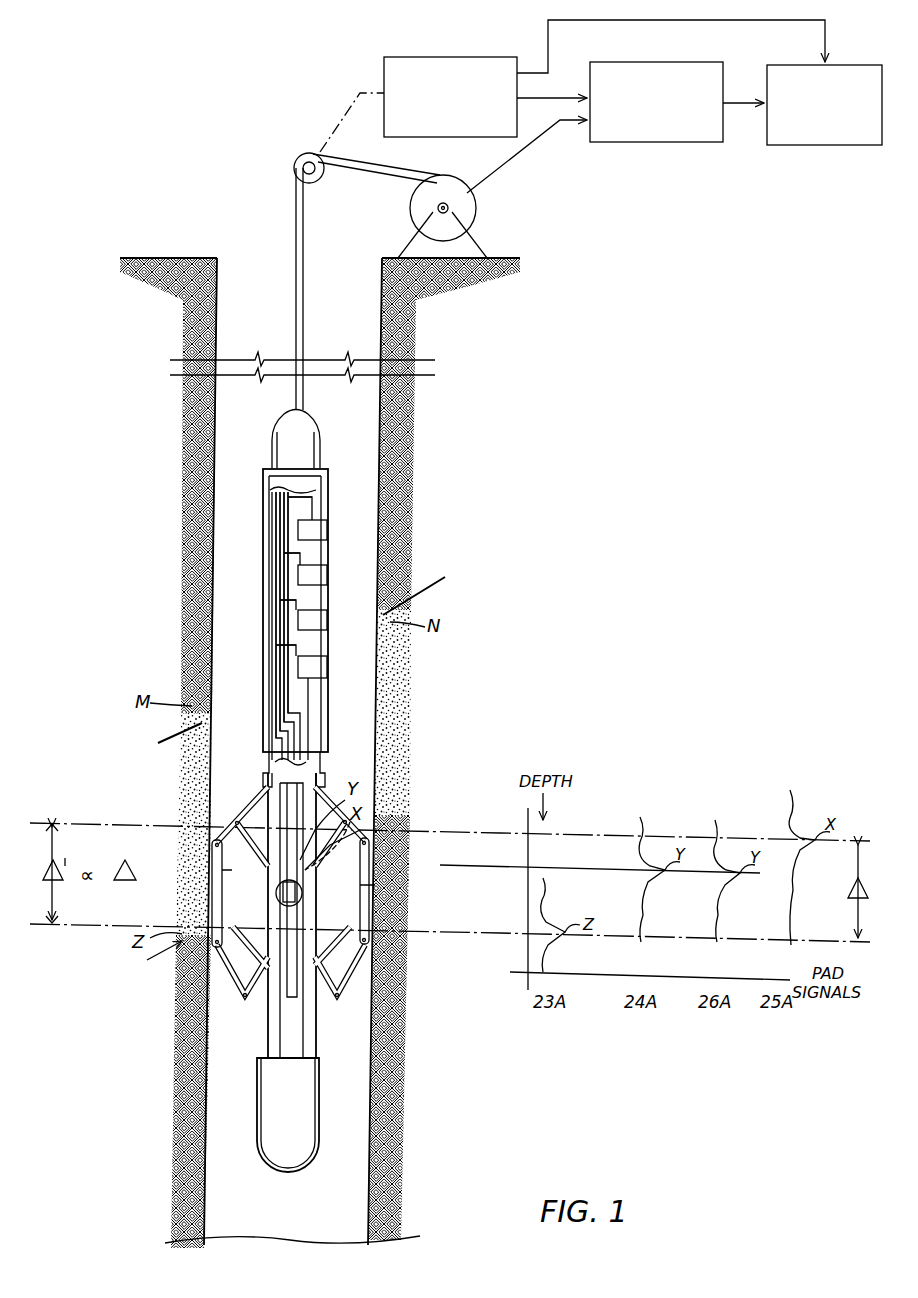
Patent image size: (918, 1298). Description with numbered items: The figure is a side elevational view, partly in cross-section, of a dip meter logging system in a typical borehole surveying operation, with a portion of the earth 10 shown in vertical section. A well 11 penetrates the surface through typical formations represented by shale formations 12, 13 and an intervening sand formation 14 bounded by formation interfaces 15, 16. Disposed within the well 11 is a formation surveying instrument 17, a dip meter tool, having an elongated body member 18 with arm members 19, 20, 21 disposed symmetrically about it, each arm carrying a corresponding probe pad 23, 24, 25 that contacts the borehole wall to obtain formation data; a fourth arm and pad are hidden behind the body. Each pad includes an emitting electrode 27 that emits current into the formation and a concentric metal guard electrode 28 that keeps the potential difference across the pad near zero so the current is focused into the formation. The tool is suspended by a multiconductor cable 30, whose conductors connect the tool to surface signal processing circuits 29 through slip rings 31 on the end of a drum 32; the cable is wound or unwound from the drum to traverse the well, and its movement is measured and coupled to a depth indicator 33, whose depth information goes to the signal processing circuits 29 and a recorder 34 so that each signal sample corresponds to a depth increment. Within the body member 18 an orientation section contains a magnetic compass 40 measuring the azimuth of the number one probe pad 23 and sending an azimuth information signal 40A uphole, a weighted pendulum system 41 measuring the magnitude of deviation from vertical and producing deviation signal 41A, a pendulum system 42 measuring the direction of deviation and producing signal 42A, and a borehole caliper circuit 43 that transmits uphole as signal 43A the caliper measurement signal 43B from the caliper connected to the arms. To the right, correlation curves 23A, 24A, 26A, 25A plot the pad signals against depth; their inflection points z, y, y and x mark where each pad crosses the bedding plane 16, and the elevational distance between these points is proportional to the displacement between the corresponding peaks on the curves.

The earth 10 is at (140, 258).
The well 11 is at (365, 330).
The shale formation 12 is at (168, 753).
The shale formation 13 is at (167, 1036).
The sand formation 14 is at (283, 772).
The formation interface 15 is at (445, 577).
The formation interface 16 is at (380, 820).
The formation surveying instrument 17 is at (340, 665).
The elongated body member 18 is at (283, 552).
The arm member 19 is at (230, 820).
The arm member 20 is at (295, 1000).
The arm member 21 is at (380, 855).
The probe pad 23 is at (212, 872).
The probe pad 24 is at (298, 884).
The probe pad 25 is at (370, 905).
The emitting electrode 27 is at (283, 890).
The guard electrode 28 is at (245, 970).
The signal processing circuits 29 is at (655, 142).
The multiconductor cable 30 is at (296, 313).
The slip rings 31 is at (455, 210).
The drum 32 is at (470, 235).
The depth indicator 33 is at (398, 60).
The recorder 34 is at (795, 145).
The magnetic compass 40 is at (307, 518).
The weighted pendulum system 41 is at (305, 569).
The pendulum system 42 is at (303, 615).
The borehole caliper circuit 43 is at (301, 661).
The azimuth information signal 40A is at (312, 505).
The deviation signal 41A is at (300, 558).
The direction of deviation signal 42A is at (296, 604).
The caliper signal 43A is at (296, 650).
The caliper measurement signal 43B is at (308, 712).
The correlation curve 23A is at (272, 692).
The correlation curve 24A is at (279, 661).
The correlation curve 25A is at (283, 633).
The correlation curve 26A is at (280, 608).